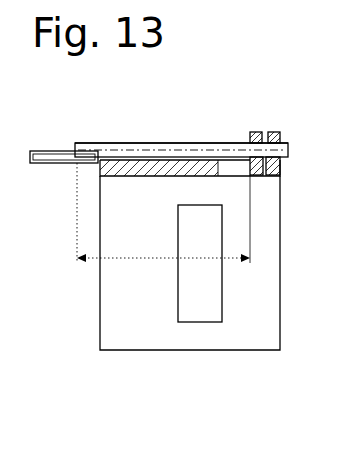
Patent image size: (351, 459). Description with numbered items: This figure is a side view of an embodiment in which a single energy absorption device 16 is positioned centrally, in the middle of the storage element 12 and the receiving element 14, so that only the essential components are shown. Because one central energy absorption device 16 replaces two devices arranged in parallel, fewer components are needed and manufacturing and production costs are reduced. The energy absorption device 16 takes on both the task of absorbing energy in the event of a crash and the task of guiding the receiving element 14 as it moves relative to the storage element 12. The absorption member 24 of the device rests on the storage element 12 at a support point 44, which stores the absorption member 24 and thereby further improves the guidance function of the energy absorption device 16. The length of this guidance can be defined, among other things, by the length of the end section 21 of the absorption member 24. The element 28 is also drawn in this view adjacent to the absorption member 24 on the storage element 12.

The storage element 12 is at (276, 135).
The receiving element 14 is at (150, 177).
The energy absorption device 16 is at (233, 138).
The end section 21 is at (178, 243).
The absorption member 24 is at (128, 142).
The nut 28 is at (253, 137).
The support point 44 is at (88, 163).